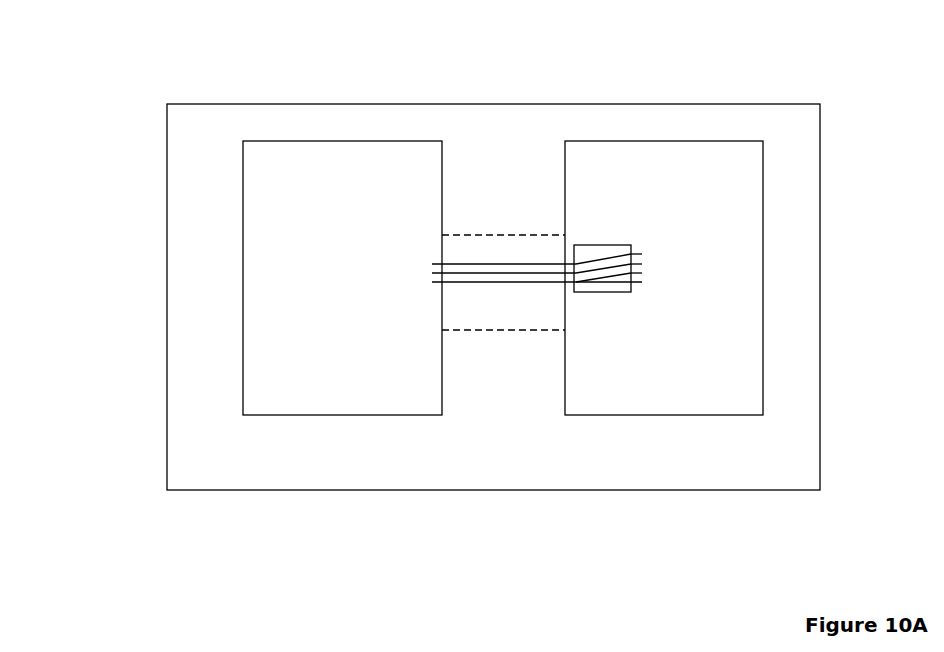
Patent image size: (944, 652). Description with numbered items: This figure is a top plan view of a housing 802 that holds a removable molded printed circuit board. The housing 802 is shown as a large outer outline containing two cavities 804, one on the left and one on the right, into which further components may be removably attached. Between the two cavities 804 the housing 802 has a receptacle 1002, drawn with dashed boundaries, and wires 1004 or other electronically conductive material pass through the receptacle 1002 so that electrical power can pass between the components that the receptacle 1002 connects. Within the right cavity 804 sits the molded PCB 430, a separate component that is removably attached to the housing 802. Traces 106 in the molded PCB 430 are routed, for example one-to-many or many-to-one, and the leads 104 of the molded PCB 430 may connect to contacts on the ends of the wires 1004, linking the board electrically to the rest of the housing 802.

The housing 802 is at (204, 240).
The cavity 804 is at (290, 187).
The receptacle 1002 is at (500, 232).
The wires 1004 is at (481, 295).
The molded PCB 430 is at (594, 234).
The traces 106 is at (603, 303).
The leads 104 is at (644, 296).